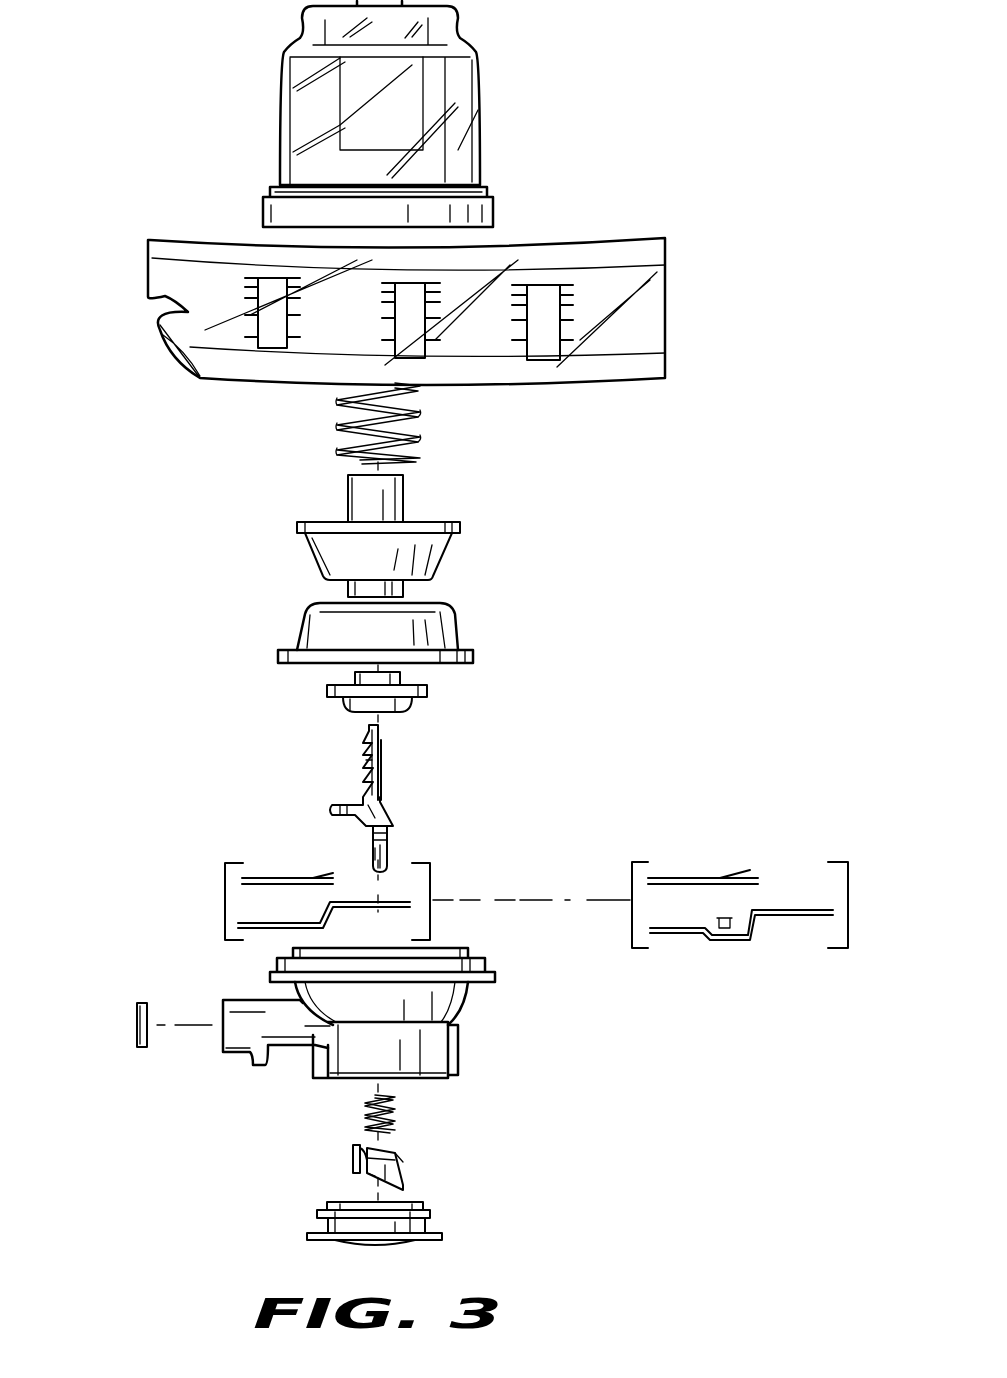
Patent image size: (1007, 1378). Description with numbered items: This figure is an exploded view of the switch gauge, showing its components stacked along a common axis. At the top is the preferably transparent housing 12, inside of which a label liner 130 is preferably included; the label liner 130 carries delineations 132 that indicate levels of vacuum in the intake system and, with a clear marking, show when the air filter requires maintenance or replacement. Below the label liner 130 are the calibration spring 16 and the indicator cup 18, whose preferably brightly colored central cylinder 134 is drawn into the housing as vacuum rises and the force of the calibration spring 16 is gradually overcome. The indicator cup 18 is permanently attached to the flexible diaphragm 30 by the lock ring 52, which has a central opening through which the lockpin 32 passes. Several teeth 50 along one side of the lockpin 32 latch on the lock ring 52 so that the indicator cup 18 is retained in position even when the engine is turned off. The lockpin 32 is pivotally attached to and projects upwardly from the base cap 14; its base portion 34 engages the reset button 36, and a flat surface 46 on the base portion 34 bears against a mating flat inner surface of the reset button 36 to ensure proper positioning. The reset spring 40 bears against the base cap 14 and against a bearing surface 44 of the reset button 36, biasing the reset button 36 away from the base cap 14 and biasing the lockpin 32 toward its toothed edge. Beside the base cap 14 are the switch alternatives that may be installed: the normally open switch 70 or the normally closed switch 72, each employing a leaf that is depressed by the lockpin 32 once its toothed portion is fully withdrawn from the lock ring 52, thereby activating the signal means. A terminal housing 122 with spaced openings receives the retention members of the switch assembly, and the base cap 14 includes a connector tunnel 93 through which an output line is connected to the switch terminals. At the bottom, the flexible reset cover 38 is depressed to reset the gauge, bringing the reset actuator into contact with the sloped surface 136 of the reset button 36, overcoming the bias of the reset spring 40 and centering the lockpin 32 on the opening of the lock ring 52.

The housing 12 is at (479, 92).
The label liner 130 is at (575, 247).
The delineations 132 is at (268, 278).
The calibration spring 16 is at (335, 432).
The central cylinder 134 is at (405, 487).
The indicator cup 18 is at (305, 551).
The flexible diaphragm 30 is at (460, 626).
The lock ring 52 is at (428, 693).
The teeth 50 is at (363, 775).
The lockpin 32 is at (377, 798).
The flat surface 46 is at (375, 848).
The base portion 34 is at (388, 845).
The normally open switch 70 is at (214, 897).
The normally closed switch 72 is at (620, 877).
The terminal housing 122 is at (143, 998).
The base cap 14 is at (351, 1031).
The connector tunnel 93 is at (238, 1037).
The reset spring 40 is at (400, 1115).
The bearing surface 44 is at (360, 1148).
The reset button 36 is at (362, 1162).
The sloped surface 136 is at (375, 1172).
The reset cover 38 is at (430, 1222).